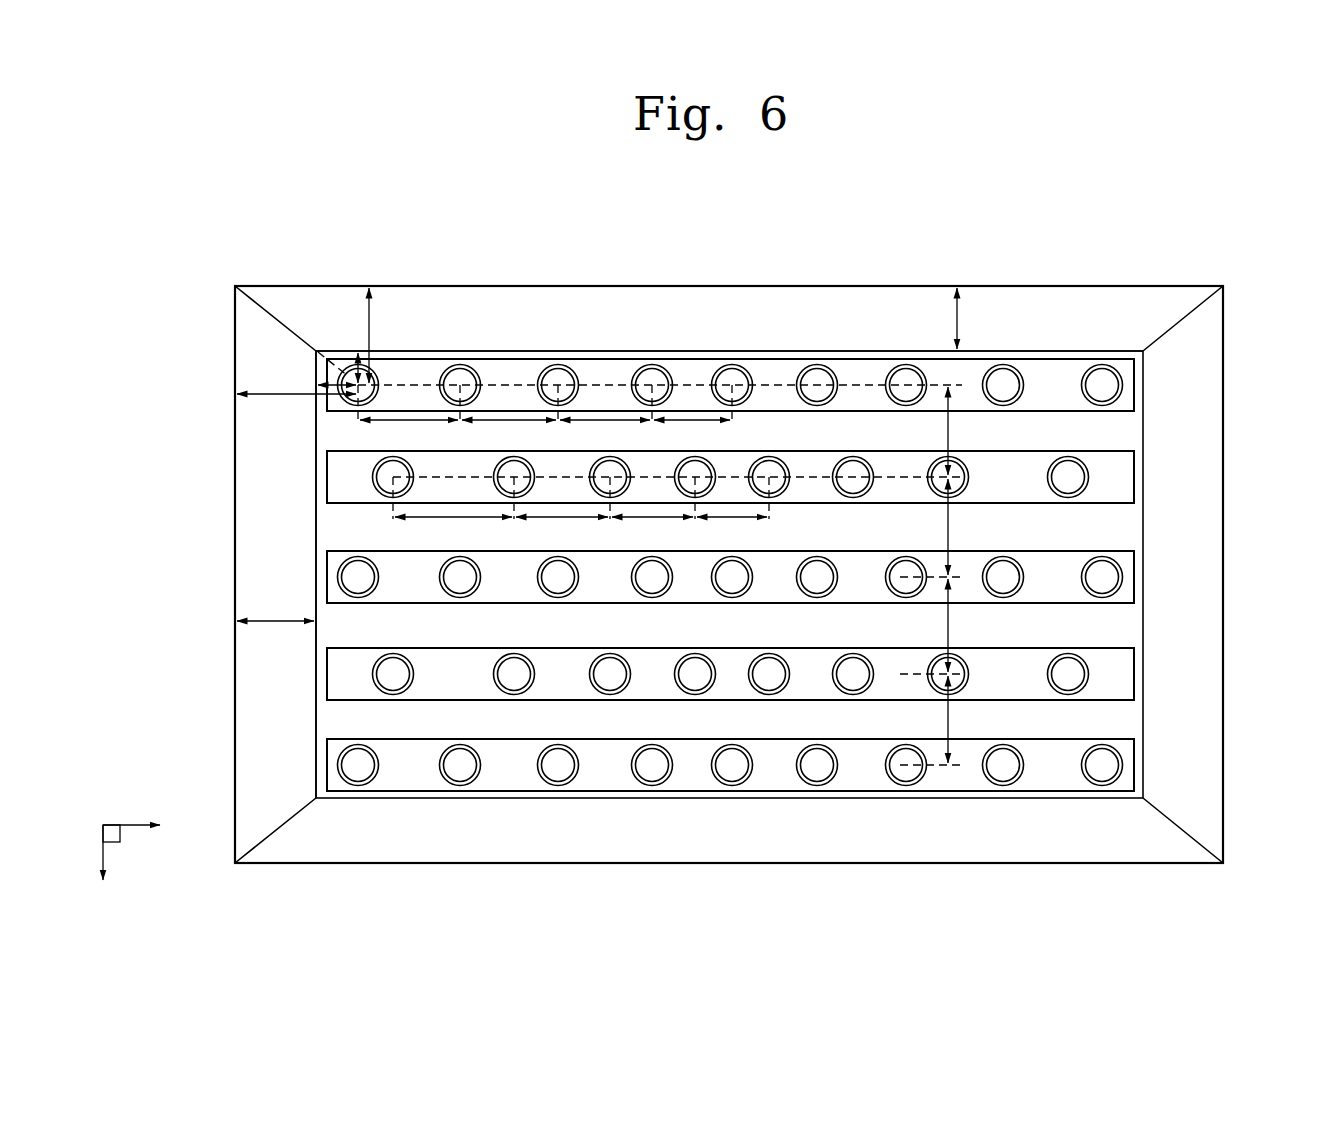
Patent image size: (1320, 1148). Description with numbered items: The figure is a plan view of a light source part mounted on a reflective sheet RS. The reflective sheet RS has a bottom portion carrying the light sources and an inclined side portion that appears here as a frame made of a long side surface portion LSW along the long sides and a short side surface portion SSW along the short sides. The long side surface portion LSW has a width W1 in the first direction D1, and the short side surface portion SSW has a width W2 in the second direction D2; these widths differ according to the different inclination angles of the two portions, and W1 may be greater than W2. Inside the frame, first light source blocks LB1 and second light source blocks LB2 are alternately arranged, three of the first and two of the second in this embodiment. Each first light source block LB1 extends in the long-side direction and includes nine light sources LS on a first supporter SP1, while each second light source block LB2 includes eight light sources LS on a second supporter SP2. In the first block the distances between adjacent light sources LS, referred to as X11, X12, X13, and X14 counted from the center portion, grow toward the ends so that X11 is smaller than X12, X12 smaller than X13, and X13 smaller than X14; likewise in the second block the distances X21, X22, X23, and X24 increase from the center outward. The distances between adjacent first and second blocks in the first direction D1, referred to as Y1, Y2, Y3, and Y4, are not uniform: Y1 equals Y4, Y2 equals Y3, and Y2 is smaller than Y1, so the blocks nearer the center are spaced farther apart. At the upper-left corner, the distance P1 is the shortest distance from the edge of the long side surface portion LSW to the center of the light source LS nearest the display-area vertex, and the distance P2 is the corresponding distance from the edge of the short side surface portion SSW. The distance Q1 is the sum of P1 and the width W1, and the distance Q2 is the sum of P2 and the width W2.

The reflective sheet RS is at (303, 284).
The long side surface portion LSW is at (628, 300).
The short side surface portion SSW is at (252, 562).
The first light source block LB1 is at (1134, 386).
The second light source block LB2 is at (1134, 478).
The light source LS is at (460, 366).
The first supporter SP1 is at (415, 366).
The second supporter SP2 is at (340, 452).
The distance P1 is at (358, 351).
The distance Q1 is at (387, 335).
The distance P2 is at (317, 383).
The distance Q2 is at (296, 407).
The width of long side surface portion W1 is at (976, 318).
The width of short side surface portion W2 is at (275, 608).
The first distance X11 is at (692, 434).
The first distance X12 is at (605, 434).
The first distance X13 is at (509, 434).
The first distance X14 is at (409, 434).
The second distance X21 is at (732, 531).
The second distance X22 is at (652, 531).
The second distance X23 is at (562, 531).
The second distance X24 is at (453, 531).
The block distance Y1 is at (933, 431).
The block distance Y2 is at (933, 527).
The block distance Y3 is at (933, 625).
The block distance Y4 is at (933, 719).
The first direction D1 is at (105, 869).
The second direction D2 is at (149, 828).